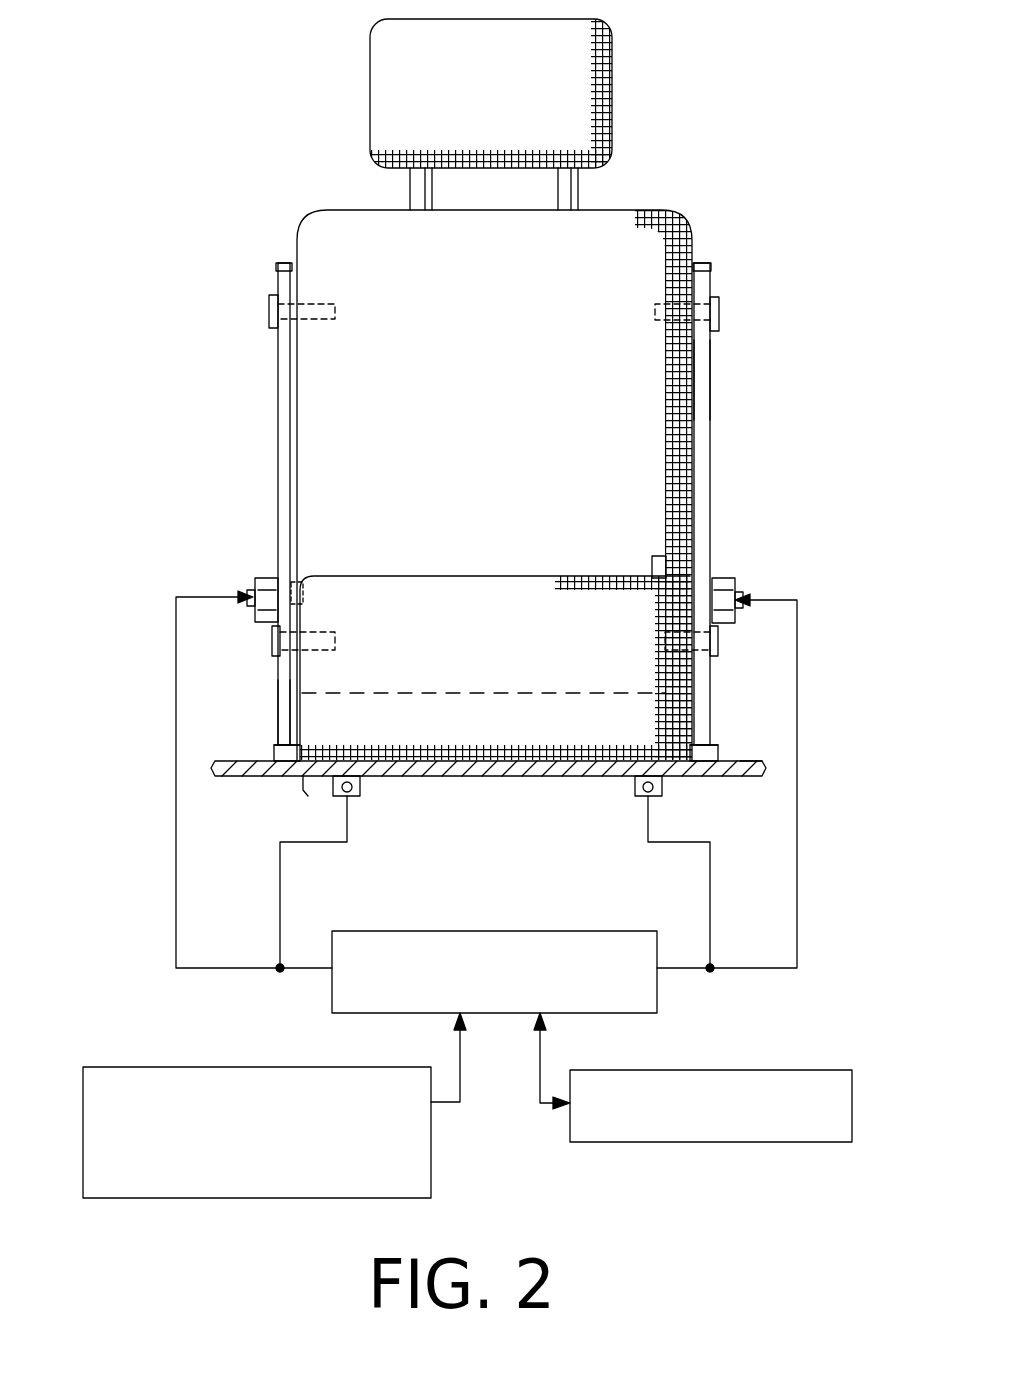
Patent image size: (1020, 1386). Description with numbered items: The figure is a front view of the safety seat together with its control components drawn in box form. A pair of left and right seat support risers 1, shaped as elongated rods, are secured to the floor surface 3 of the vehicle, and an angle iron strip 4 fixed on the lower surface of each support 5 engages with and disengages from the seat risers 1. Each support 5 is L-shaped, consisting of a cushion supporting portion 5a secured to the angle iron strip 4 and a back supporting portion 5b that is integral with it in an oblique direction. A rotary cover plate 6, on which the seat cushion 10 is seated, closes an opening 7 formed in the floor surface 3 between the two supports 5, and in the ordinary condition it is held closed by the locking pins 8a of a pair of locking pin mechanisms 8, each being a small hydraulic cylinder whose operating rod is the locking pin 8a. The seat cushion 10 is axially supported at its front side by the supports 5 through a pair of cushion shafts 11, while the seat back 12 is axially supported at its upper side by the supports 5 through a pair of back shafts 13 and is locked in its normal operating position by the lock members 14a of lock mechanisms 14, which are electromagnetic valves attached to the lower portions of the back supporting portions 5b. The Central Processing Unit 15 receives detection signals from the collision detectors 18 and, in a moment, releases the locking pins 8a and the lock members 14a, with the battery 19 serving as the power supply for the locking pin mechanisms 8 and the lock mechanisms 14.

The seat support riser 1 is at (272, 752).
The floor surface 3 is at (732, 760).
The angle iron strip 4 is at (300, 763).
The support 5 is at (278, 443).
The cushion supporting portion 5a is at (280, 702).
The back supporting portion 5b is at (705, 398).
The rotary cover plate 6 is at (487, 779).
The opening 7 is at (306, 763).
The locking pin mechanism 8 is at (362, 797).
The locking pin 8a is at (350, 800).
The seat cushion 10 is at (472, 577).
The cushion shaft 11 is at (272, 648).
The seat back 12 is at (634, 211).
The back shaft 13 is at (268, 305).
The lock mechanism 14 is at (255, 576).
The lock member 14a is at (305, 570).
The Central Processing Unit 15 is at (614, 931).
The collision detector 18 is at (188, 1067).
The battery 19 is at (800, 1068).